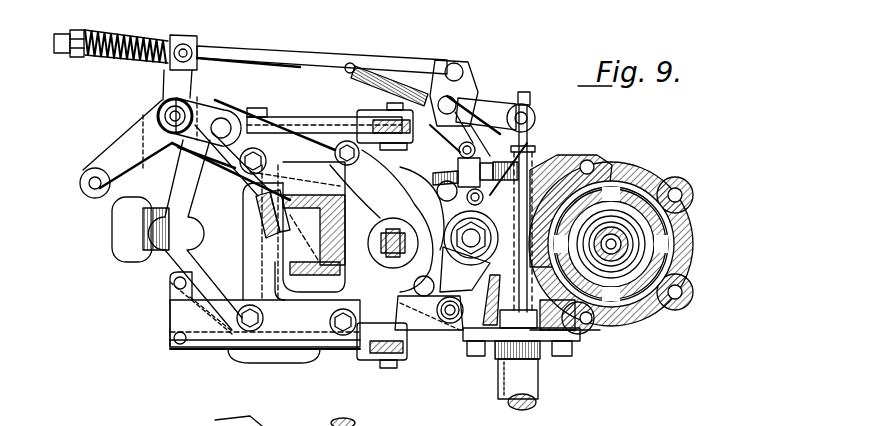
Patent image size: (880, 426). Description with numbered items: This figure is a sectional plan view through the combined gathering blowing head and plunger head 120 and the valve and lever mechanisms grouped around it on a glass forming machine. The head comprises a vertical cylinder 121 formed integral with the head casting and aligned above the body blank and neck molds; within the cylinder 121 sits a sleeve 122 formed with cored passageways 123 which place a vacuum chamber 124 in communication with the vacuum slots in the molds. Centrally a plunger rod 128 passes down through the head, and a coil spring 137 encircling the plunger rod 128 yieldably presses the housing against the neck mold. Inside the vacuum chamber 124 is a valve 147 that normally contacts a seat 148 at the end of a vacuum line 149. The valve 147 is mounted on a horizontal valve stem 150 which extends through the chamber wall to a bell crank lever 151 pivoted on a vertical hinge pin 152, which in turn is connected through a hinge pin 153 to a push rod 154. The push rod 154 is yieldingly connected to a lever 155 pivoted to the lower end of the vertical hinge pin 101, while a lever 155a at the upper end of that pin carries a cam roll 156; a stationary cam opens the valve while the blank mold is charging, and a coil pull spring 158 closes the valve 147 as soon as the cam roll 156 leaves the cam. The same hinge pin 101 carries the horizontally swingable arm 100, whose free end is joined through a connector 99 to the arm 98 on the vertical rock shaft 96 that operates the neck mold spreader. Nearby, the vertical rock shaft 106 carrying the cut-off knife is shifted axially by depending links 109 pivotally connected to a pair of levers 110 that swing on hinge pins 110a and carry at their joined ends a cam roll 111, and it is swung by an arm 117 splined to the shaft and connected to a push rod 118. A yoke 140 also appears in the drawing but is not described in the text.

The vertical rock shaft 96 is at (478, 232).
The arm 98 is at (462, 325).
The connector 99 is at (425, 322).
The horizontally swingable arm 100 is at (178, 164).
The vertical hinge pin 101 is at (190, 110).
The vertical rock shaft 106 is at (393, 258).
The depending links 109 is at (378, 120).
The levers 110 is at (322, 124).
The hinge pins 110a is at (255, 362).
The cam roll 111 is at (120, 238).
The arm 117 is at (405, 230).
The push rod 118 is at (256, 222).
The combined gathering blowing head and plunger head 120 is at (628, 244).
The vertical cylinder 121 is at (683, 212).
The sleeve 122 is at (647, 297).
The cored passageways 123 is at (652, 190).
The vacuum chamber 124 is at (485, 343).
The plunger rod 128 is at (615, 240).
The coil spring 137 is at (625, 256).
The yoke 140 is at (242, 304).
The valve 147 is at (540, 378).
The seat 148 is at (568, 356).
The vacuum line 149 is at (526, 404).
The valve stem 150 is at (530, 148).
The bell crank lever 151 is at (488, 110).
The vertical hinge pin 152 is at (455, 100).
The hinge pin 153 is at (456, 64).
The push rod 154 is at (302, 60).
The lever 155 is at (172, 80).
The lever 155a is at (135, 140).
The cam roll 156 is at (85, 178).
The coil pull spring 158 is at (405, 66).